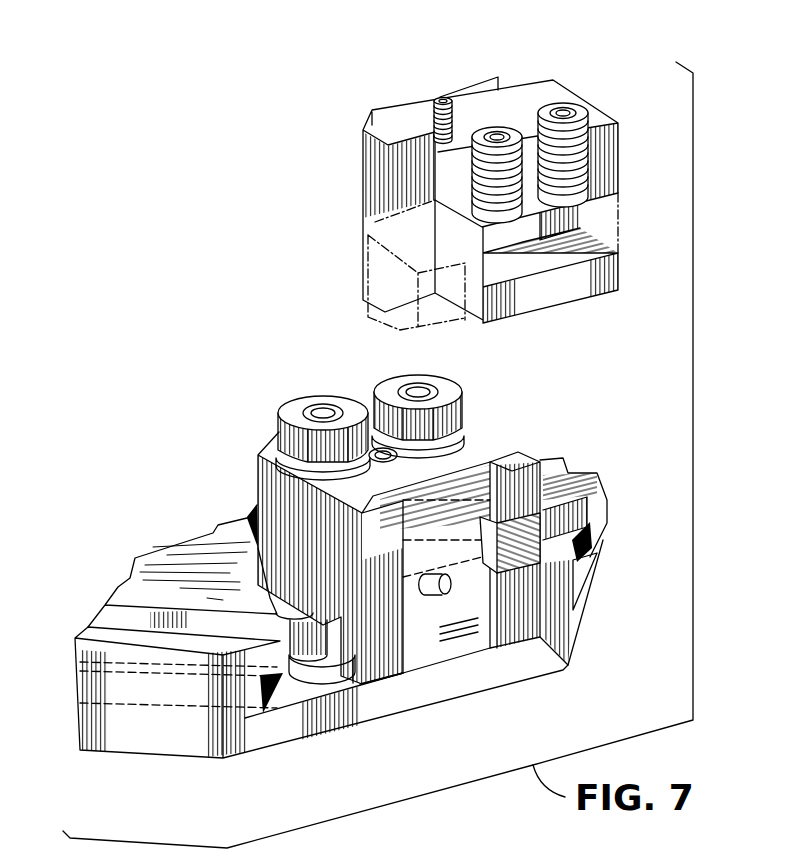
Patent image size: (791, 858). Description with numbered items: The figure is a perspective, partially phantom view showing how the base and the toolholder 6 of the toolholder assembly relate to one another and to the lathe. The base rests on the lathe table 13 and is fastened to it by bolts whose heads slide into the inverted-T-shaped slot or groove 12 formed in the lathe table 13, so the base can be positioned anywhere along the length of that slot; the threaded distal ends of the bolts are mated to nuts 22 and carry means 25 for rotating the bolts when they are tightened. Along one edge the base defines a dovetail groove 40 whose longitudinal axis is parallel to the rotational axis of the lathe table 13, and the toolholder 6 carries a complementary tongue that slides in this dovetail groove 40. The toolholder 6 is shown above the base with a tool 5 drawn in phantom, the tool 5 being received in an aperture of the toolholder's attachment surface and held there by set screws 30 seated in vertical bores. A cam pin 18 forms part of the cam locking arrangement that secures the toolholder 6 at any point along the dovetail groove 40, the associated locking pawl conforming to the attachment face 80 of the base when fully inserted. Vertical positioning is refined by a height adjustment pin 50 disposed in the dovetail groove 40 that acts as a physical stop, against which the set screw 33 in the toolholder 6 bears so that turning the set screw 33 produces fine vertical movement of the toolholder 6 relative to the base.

The tool 5 is at (380, 241).
The toolholder 6 is at (616, 143).
The slot or groove 12 is at (600, 567).
The lathe table 13 is at (105, 735).
The cam pin 18 is at (503, 438).
The nut 22 is at (458, 392).
The means to rotate bolts 25 is at (306, 410).
The set screw 30 is at (565, 110).
The set screw 33 is at (445, 98).
The dovetail groove 40 is at (548, 462).
The height adjustment pin 50 is at (445, 600).
The attachment face 80 is at (378, 684).